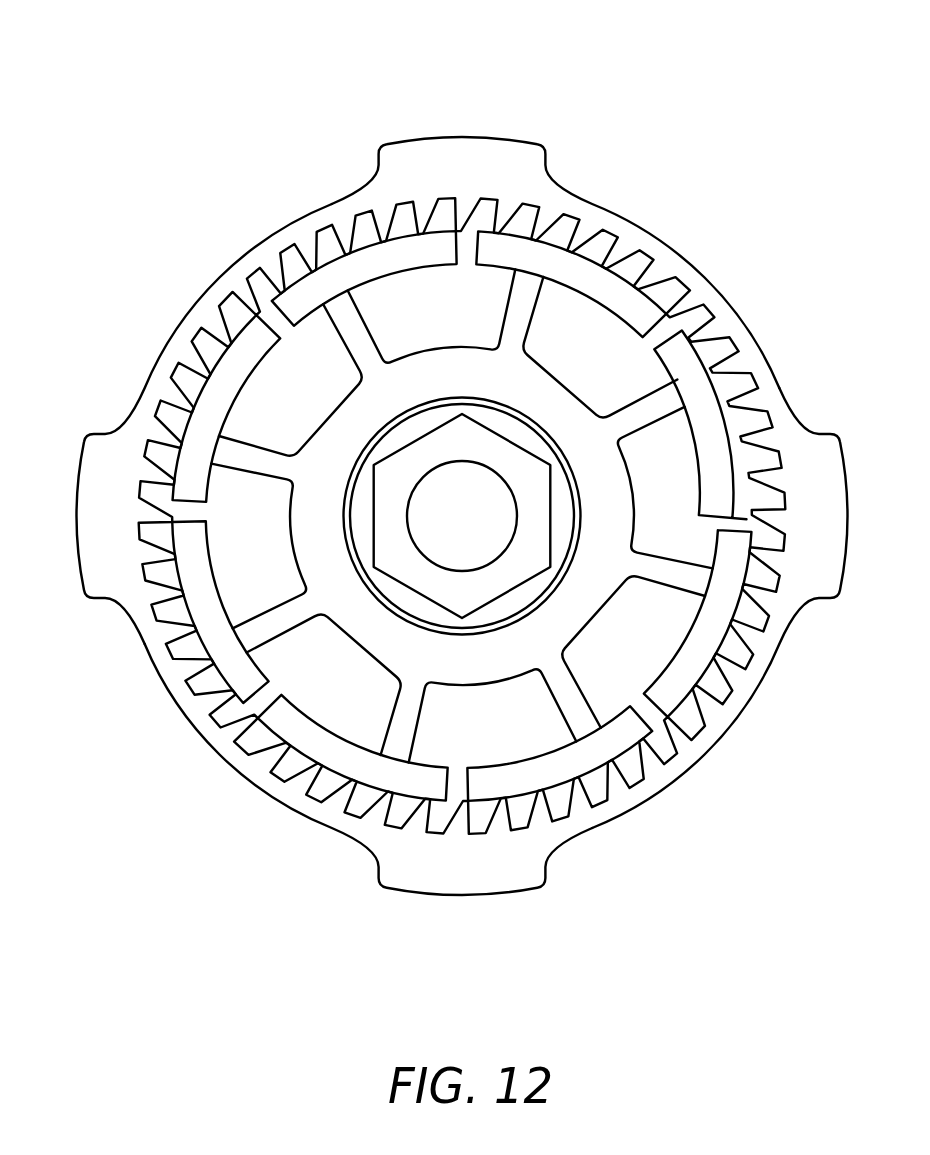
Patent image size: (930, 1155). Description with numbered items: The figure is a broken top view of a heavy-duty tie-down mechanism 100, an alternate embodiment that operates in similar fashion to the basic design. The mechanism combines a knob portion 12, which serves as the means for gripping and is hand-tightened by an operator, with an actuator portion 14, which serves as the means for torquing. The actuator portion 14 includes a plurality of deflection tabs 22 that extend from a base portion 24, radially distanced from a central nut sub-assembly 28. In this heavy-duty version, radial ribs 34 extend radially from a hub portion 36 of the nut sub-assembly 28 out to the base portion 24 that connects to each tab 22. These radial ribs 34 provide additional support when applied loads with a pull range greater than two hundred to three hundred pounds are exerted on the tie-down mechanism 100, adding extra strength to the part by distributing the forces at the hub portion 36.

The tie-down mechanism 100 is at (456, 480).
The knob portion 12 is at (432, 870).
The actuator portion 14 is at (326, 676).
The deflection tabs 22 is at (236, 328).
The base portion 24 is at (148, 422).
The nut sub-assembly 28 is at (415, 380).
The radial ribs 34 is at (248, 458).
The hub portion 36 is at (265, 310).